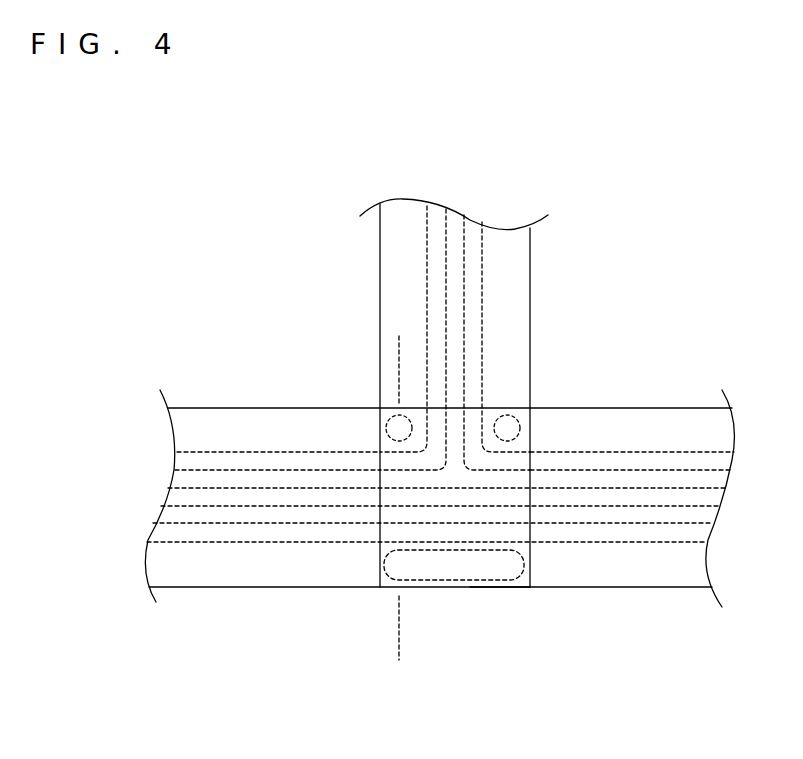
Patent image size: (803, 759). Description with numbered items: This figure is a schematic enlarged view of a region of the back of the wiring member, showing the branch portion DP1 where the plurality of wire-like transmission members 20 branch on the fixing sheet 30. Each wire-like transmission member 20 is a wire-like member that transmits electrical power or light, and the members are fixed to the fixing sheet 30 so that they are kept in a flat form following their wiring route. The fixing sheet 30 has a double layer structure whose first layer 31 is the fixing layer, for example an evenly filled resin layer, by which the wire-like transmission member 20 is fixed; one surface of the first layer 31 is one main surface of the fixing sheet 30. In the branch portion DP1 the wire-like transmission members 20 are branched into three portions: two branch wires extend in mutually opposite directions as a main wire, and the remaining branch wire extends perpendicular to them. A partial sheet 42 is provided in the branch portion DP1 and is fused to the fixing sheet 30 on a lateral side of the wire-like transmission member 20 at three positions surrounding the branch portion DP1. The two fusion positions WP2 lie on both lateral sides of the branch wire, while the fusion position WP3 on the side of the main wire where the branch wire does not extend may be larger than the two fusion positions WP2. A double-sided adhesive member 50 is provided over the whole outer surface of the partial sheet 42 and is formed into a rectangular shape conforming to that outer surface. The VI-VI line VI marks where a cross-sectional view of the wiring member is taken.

The wire-like transmission member 20 is at (477, 302).
The fixing sheet 30 is at (517, 263).
The first layer 31 is at (226, 422).
The fusion position WP2 is at (391, 416).
The branch portion DP1 is at (483, 438).
The partial sheet 42 is at (390, 591).
The double-sided adhesive member 50 is at (381, 565).
The fusion position WP3 is at (500, 587).
The VI-VI line VI is at (391, 344).